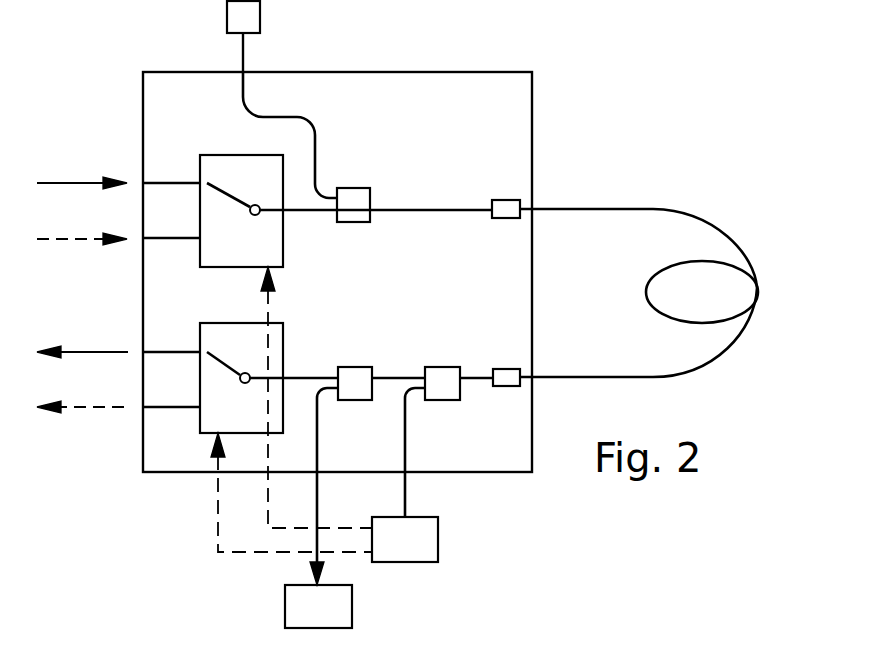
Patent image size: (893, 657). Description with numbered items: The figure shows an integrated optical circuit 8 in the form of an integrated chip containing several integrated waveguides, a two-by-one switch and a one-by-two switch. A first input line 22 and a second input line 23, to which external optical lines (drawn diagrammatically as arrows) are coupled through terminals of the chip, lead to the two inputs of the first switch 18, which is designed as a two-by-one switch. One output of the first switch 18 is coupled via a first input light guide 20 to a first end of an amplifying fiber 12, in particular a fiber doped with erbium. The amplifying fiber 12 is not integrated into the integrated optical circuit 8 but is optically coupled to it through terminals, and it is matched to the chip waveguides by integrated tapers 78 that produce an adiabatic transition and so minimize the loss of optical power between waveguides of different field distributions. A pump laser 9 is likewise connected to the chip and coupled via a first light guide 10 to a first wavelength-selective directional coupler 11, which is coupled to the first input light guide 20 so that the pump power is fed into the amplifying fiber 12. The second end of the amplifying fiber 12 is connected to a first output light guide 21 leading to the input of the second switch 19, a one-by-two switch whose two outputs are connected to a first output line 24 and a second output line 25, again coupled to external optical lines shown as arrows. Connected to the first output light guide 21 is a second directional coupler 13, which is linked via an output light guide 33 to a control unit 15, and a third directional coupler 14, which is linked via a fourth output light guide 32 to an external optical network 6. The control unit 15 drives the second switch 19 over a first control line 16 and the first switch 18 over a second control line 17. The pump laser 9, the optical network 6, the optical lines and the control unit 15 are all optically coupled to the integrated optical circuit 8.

The external optical network 6 is at (345, 607).
The integrated optical circuit 8 is at (535, 103).
The pump laser 9 is at (237, 15).
The first light guide 10 is at (303, 117).
The first wavelength-selective directional coupler 11 is at (358, 190).
The amplifying fiber 12 is at (645, 290).
The second directional coupler 13 is at (448, 368).
The third directional coupler 14 is at (362, 368).
The control unit 15 is at (430, 540).
The first control line 16 is at (218, 508).
The second control line 17 is at (267, 490).
The first switch 18 is at (275, 247).
The second switch 19 is at (283, 343).
The first input light guide 20 is at (429, 208).
The first output light guide 21 is at (401, 377).
The first input line 22 is at (172, 182).
The second input line 23 is at (168, 239).
The first output line 24 is at (170, 407).
The second output line 25 is at (175, 352).
The fourth output light guide 32 is at (317, 443).
The output light guide 33 is at (405, 440).
The integrated tapers 78 is at (506, 200).